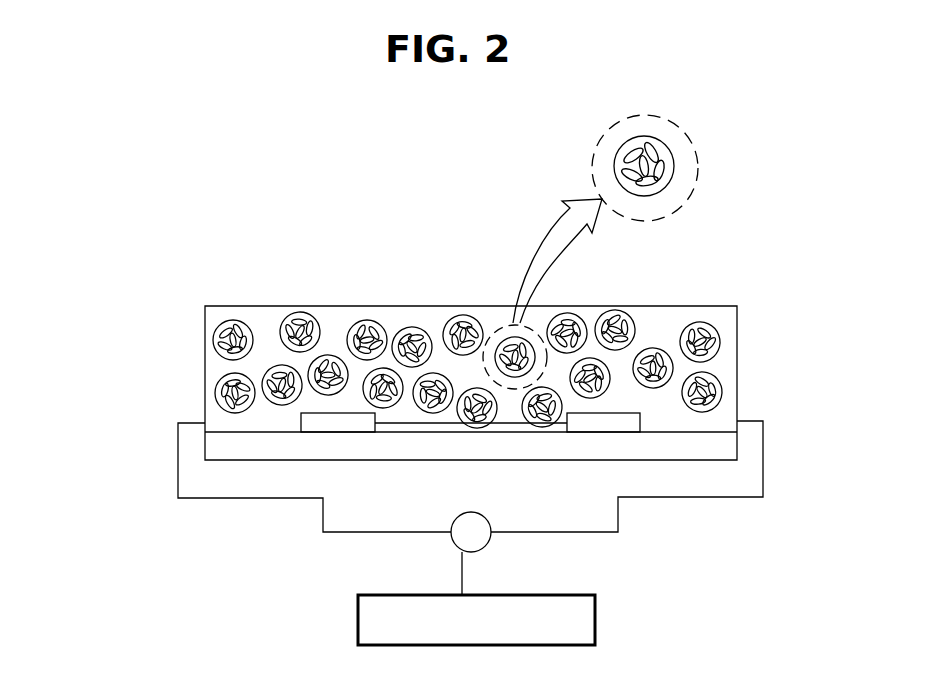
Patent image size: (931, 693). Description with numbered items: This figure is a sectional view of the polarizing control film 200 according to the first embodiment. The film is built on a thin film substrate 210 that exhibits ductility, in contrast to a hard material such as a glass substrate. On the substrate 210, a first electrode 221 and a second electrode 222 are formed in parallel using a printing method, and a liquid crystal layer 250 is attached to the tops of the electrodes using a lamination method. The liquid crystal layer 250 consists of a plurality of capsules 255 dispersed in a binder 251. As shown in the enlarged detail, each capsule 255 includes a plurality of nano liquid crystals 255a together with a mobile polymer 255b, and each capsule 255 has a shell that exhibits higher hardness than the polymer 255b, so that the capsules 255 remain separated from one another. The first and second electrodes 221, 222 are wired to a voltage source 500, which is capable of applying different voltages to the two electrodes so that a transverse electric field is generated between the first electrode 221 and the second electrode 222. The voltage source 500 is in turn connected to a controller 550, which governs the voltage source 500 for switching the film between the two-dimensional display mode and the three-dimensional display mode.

The polarizing control film 200 is at (758, 287).
The thin film substrate 210 is at (403, 442).
The first electrode 221 is at (338, 425).
The second electrode 222 is at (603, 423).
The liquid crystal layer 250 is at (115, 325).
The binder 251 is at (207, 383).
The capsule 255 is at (210, 339).
The nano liquid crystals 255a is at (667, 176).
The mobile polymer 255b is at (670, 152).
The voltage source 500 is at (478, 550).
The controller 550 is at (476, 620).